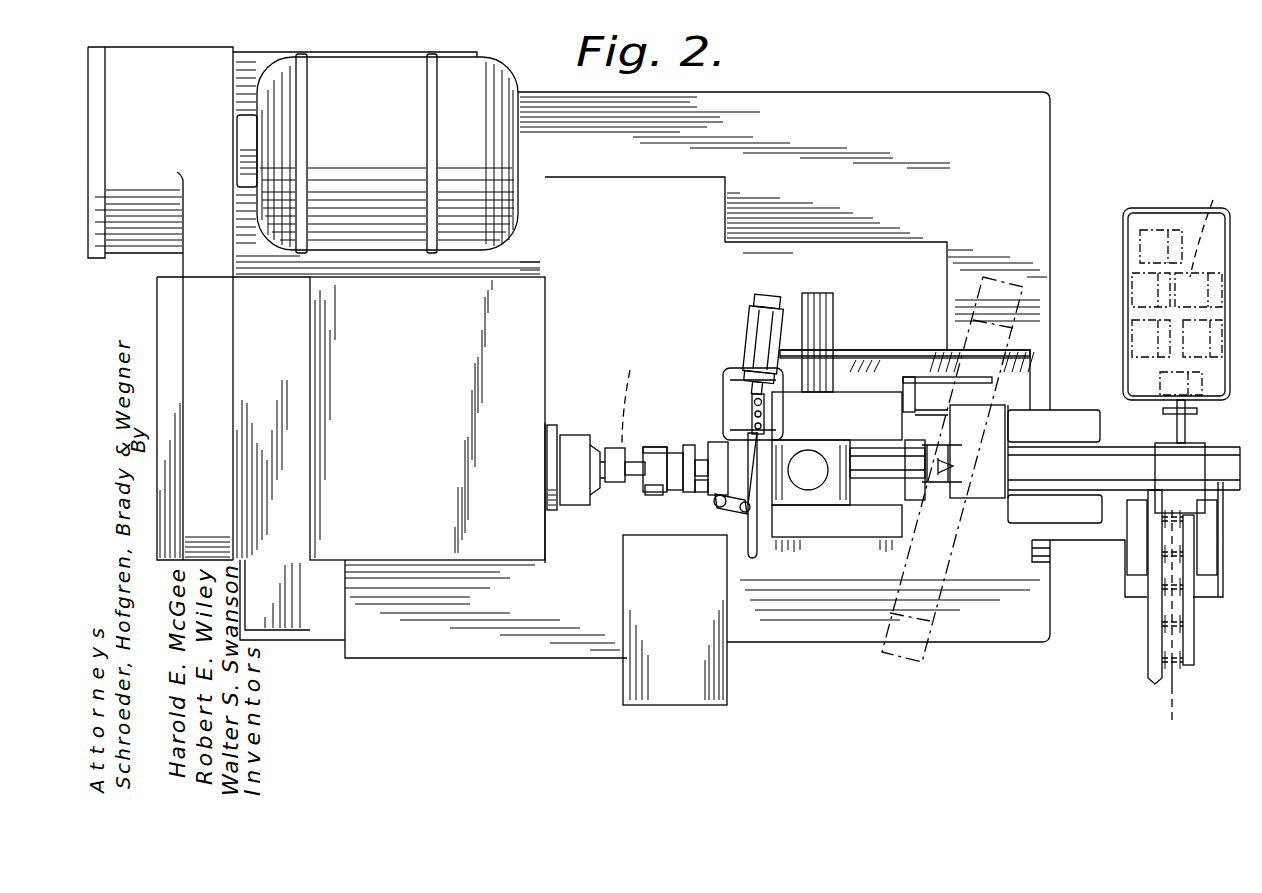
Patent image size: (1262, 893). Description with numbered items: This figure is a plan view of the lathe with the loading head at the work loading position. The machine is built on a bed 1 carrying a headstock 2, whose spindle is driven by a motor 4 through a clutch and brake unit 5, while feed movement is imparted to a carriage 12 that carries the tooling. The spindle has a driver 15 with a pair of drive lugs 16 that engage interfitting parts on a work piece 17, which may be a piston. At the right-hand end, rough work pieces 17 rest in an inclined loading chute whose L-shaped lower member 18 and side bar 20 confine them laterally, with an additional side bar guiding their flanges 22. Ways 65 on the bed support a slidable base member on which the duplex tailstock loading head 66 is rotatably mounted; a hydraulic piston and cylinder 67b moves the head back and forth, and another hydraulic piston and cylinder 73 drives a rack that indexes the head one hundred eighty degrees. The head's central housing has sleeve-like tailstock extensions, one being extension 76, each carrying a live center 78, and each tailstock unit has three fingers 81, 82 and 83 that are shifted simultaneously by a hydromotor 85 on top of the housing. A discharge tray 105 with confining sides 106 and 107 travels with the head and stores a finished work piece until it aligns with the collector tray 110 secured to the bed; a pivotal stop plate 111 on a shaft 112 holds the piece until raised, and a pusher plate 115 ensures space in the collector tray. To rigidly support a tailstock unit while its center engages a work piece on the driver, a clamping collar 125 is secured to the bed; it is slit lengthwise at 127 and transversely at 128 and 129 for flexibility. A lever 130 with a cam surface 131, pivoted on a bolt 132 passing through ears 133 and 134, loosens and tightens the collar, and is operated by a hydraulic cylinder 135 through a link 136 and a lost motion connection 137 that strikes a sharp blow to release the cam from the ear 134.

The bed 1 is at (969, 100).
The headstock 2 is at (518, 346).
The motor 4 is at (505, 137).
The clutch and brake unit 5 is at (178, 143).
The carriage 12 is at (685, 616).
The driver 15 is at (572, 437).
The drive lugs 16 is at (638, 448).
The work piece 17 is at (990, 530).
The lower member 18 is at (1152, 685).
The side bar 20 is at (1195, 665).
The flanges 22 is at (1224, 330).
The ways 65 is at (1100, 440).
The duplex tailstock loading head 66 is at (863, 388).
The hydraulic piston and cylinder 67b is at (1112, 473).
The hydraulic piston and cylinder 73 is at (820, 292).
The cylindrical tailstock extension 76 is at (862, 503).
The live center 78 is at (954, 468).
The finger 81 is at (650, 496).
The finger 82 is at (655, 445).
The finger 83 is at (929, 504).
The hydromotor 85 is at (808, 470).
The discharge tray 105 is at (915, 397).
The confining side 106 is at (1018, 432).
The confining side 107 is at (962, 413).
The collector tray 110 is at (1125, 226).
The stop plate or gate 111 is at (975, 375).
The shaft 112 is at (905, 368).
The pusher plate 115 is at (1188, 418).
The clamping collar 125 is at (697, 428).
The slit 127 is at (690, 492).
The transverse slit 128 is at (742, 440).
The transverse slit 129 is at (772, 502).
The lever 130 is at (740, 526).
The cam surface 131 is at (720, 520).
The bolt 132 is at (707, 430).
The ear 133 is at (664, 443).
The ear 134 is at (700, 502).
The hydraulic cylinder 135 is at (745, 333).
The link 136 is at (782, 433).
The lost motion connection 137 is at (785, 408).